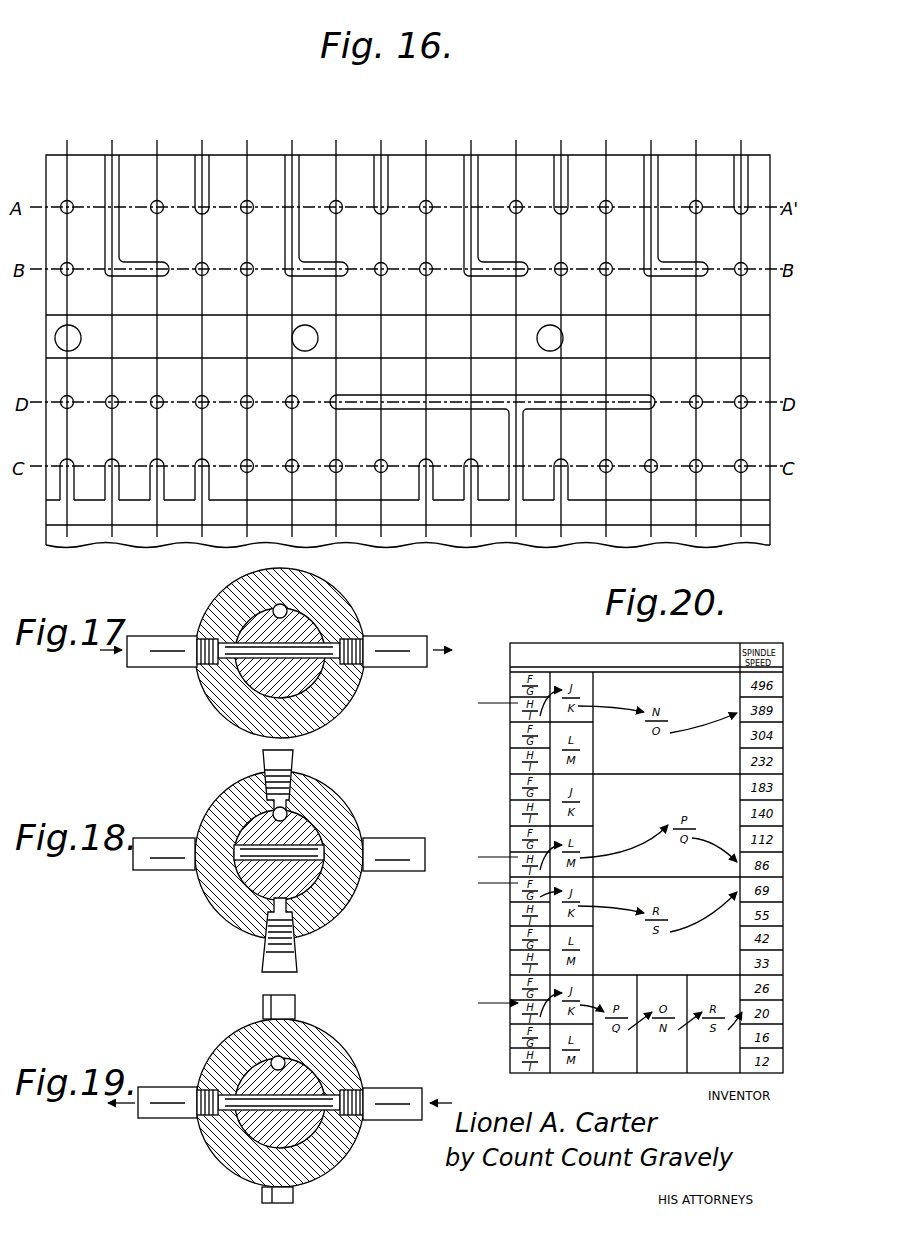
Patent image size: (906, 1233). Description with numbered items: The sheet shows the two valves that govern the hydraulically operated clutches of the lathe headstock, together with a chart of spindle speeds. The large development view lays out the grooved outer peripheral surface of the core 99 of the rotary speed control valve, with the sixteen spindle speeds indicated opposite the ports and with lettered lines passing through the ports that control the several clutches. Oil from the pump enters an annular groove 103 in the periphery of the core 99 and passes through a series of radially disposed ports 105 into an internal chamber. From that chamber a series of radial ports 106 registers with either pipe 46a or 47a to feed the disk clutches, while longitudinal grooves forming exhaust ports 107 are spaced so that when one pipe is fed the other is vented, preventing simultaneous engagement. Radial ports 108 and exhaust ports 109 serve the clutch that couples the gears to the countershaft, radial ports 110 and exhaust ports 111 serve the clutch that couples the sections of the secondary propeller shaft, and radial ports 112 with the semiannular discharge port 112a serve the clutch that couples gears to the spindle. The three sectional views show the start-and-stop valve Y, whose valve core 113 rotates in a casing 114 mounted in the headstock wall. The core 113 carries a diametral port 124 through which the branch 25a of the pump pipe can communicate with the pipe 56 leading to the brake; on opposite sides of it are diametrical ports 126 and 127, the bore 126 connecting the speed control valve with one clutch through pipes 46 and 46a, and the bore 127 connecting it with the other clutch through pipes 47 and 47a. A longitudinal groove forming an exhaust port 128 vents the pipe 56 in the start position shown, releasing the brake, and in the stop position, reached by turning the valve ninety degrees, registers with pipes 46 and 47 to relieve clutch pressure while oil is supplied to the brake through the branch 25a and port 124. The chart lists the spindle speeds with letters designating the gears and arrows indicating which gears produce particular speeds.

In FIG. 16, the core 99 is at (76, 557).
In FIG. 16, the annular groove 103 is at (735, 343).
In FIG. 16, the radially disposed ports 105 is at (55, 340).
In FIG. 16, the radial ports 106 is at (160, 200).
In FIG. 16, the exhaust ports 107 is at (204, 196).
In FIG. 16, the radial ports 108 is at (62, 275).
In FIG. 16, the exhaust ports 109 is at (128, 278).
In FIG. 16, the radial ports 110 is at (331, 460).
In FIG. 16, the exhaust ports 111 is at (61, 488).
In FIG. 16, the radial ports 112 is at (110, 397).
In FIG. 16, the semiannular discharge port 112a is at (495, 395).
In FIG. 17, the pipe 47 is at (158, 667).
In FIG. 18, the pipe 47 is at (162, 840).
In FIG. 17, the pipe 47a is at (400, 668).
In FIG. 18, the pipe 47a is at (401, 848).
In FIG. 17, the valve core 113 is at (252, 692).
In FIG. 19, the valve core 113 is at (243, 1130).
In FIG. 17, the diametrical port 127 is at (320, 641).
In FIG. 17, the exhaust port 128 is at (282, 604).
In FIG. 18, the exhaust port 128 is at (284, 812).
In FIG. 19, the exhaust port 128 is at (285, 1060).
In FIG. 17, the start-and-stop valve Y is at (348, 592).
In FIG. 18, the start-and-stop valve Y is at (210, 925).
In FIG. 19, the start-and-stop valve Y is at (382, 1072).
In FIG. 18, the pipe 56 is at (294, 763).
In FIG. 19, the pipe 56 is at (295, 1004).
In FIG. 18, the diametral port 124 is at (216, 882).
In FIG. 18, the casing 114 is at (356, 900).
In FIG. 19, the casing 114 is at (208, 1128).
In FIG. 18, the branch 25a is at (265, 957).
In FIG. 19, the branch 25a is at (262, 1195).
In FIG. 19, the pipe 46 is at (161, 1094).
In FIG. 19, the pipe 46a is at (400, 1100).
In FIG. 19, the diametrical port 126 is at (312, 1100).